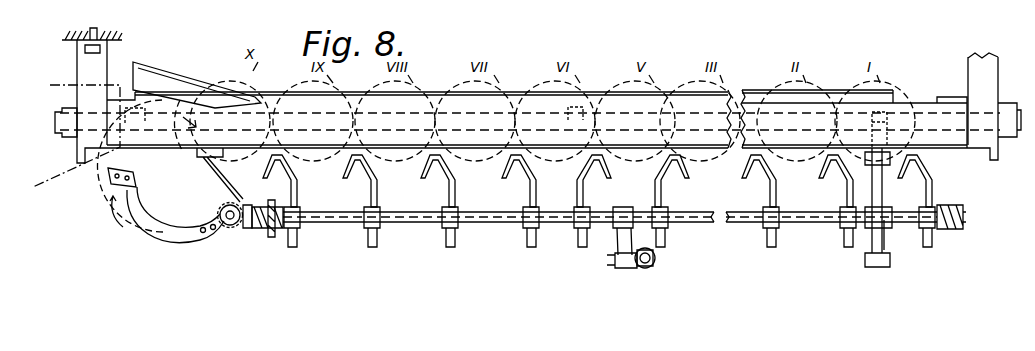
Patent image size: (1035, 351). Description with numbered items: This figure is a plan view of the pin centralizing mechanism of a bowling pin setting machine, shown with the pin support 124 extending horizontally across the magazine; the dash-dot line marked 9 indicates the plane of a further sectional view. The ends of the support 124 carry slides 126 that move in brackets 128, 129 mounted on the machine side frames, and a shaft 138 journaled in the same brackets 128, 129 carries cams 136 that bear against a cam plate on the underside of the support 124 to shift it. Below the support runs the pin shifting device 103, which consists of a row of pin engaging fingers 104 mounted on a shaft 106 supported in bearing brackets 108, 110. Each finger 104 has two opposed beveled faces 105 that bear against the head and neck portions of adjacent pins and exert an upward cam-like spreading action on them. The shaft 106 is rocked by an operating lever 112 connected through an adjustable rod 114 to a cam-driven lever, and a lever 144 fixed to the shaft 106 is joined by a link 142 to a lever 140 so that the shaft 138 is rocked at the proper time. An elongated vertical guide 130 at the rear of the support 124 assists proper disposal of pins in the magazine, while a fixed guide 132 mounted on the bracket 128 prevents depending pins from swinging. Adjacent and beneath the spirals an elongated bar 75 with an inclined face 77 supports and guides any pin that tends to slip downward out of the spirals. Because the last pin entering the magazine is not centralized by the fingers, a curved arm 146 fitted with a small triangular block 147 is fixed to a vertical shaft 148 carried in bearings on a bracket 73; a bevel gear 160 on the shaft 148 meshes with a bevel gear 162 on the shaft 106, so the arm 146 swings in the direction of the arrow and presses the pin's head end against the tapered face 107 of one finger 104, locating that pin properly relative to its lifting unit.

The section line 9 is at (69, 137).
The bracket 73 is at (272, 237).
The elongated bar 75 is at (748, 112).
The inclined face 77 is at (830, 115).
The pin shifting device 103 is at (495, 231).
The pin engaging fingers 104 is at (380, 171).
The beveled faces 105 is at (552, 166).
The shaft 106 is at (401, 224).
The face 107 is at (262, 168).
The bearing bracket 108 is at (270, 228).
The bearing bracket 110 is at (955, 204).
The operating lever 112 is at (622, 235).
The adjustable rod 114 is at (641, 266).
The support 124 is at (905, 105).
The slides 126 is at (126, 100).
The bracket 128 is at (88, 58).
The bracket 129 is at (979, 54).
The elongated vertical guide 130 is at (478, 152).
The fixed guide 132 is at (185, 72).
The cams 136 is at (574, 107).
The shaft 138 is at (56, 122).
The lever 140 is at (900, 147).
The link 142 is at (877, 180).
The lever 144 is at (888, 244).
The curved arm 146 is at (155, 240).
The triangular block 147 is at (115, 186).
The vertical shaft 148 is at (228, 228).
The bevel gear 160 is at (222, 213).
The bevel gear 162 is at (243, 210).